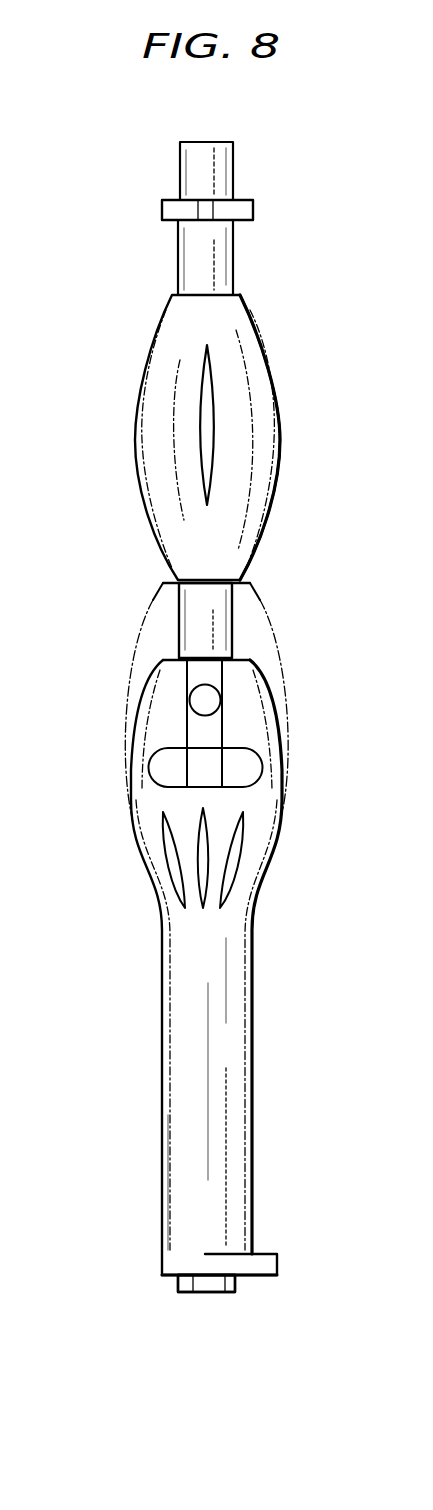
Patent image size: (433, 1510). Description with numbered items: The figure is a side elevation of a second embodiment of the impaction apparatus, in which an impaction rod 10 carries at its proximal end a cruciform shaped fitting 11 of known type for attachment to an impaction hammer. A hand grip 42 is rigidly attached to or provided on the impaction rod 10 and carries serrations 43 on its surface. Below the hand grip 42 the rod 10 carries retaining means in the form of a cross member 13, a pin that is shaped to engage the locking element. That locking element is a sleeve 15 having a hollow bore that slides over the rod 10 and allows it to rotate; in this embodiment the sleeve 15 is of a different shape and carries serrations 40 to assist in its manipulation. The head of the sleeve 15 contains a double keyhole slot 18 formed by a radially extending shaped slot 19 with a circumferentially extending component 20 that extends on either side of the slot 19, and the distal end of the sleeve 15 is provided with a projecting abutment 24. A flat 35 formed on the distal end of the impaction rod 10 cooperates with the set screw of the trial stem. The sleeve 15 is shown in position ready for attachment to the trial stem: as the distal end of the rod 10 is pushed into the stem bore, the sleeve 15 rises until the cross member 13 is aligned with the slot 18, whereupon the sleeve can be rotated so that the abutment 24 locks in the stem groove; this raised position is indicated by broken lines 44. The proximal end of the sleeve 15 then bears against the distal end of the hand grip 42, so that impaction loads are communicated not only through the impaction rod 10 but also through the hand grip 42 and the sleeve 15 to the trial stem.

The impaction rod 10 is at (232, 612).
The cruciform shaped fitting 11 is at (253, 205).
The cross member 13 is at (210, 698).
The sleeve 15 is at (222, 1038).
The double keyhole slot 18 is at (163, 767).
The radially extending shaped slot 19 is at (208, 737).
The circumferentially extending component 20 is at (245, 768).
The projecting abutment 24 is at (260, 1252).
The flat 35 is at (208, 1283).
The serrations 40 is at (235, 855).
The hand grip 42 is at (252, 473).
The serrations 43 is at (210, 373).
The broken lines 44 is at (140, 623).